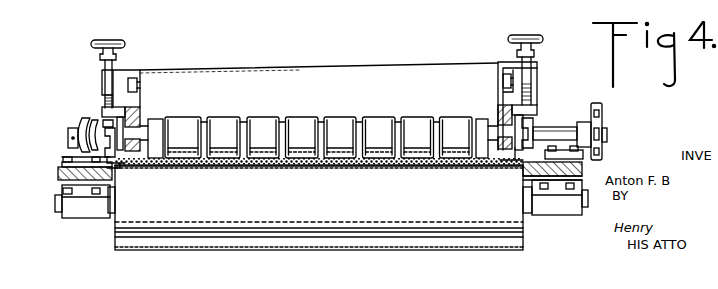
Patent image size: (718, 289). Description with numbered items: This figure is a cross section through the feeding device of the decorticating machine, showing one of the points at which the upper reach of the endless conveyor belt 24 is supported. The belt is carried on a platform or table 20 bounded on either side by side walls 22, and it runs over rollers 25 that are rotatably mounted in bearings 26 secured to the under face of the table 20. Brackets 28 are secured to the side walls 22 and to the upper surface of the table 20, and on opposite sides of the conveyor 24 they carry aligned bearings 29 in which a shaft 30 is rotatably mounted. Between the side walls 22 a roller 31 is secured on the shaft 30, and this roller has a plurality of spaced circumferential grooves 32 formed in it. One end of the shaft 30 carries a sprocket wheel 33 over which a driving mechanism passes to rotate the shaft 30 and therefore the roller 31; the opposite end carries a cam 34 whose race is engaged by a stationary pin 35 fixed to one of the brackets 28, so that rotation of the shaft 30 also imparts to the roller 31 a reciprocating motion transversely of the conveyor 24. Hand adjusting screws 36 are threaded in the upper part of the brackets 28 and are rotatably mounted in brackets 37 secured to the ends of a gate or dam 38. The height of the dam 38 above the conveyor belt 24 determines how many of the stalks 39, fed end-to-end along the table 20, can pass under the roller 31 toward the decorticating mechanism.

The platform or table 20 is at (60, 168).
The side walls 22 is at (138, 108).
The endless conveyor belt 24 is at (172, 250).
The rollers 25 is at (243, 210).
The bearings 26 is at (92, 220).
The brackets 28 is at (63, 163).
The aligned bearings 29 is at (112, 127).
The shaft 30 is at (572, 126).
The roller 31 is at (260, 122).
The circumferential grooves 32 is at (165, 117).
The sprocket wheel 33 is at (603, 116).
The cam 34 is at (82, 120).
The stationary pin 35 is at (112, 168).
The hand adjusting screws 36 is at (105, 88).
The brackets 37 is at (123, 70).
The gate or dam 38 is at (228, 72).
The stalks 39 is at (317, 168).